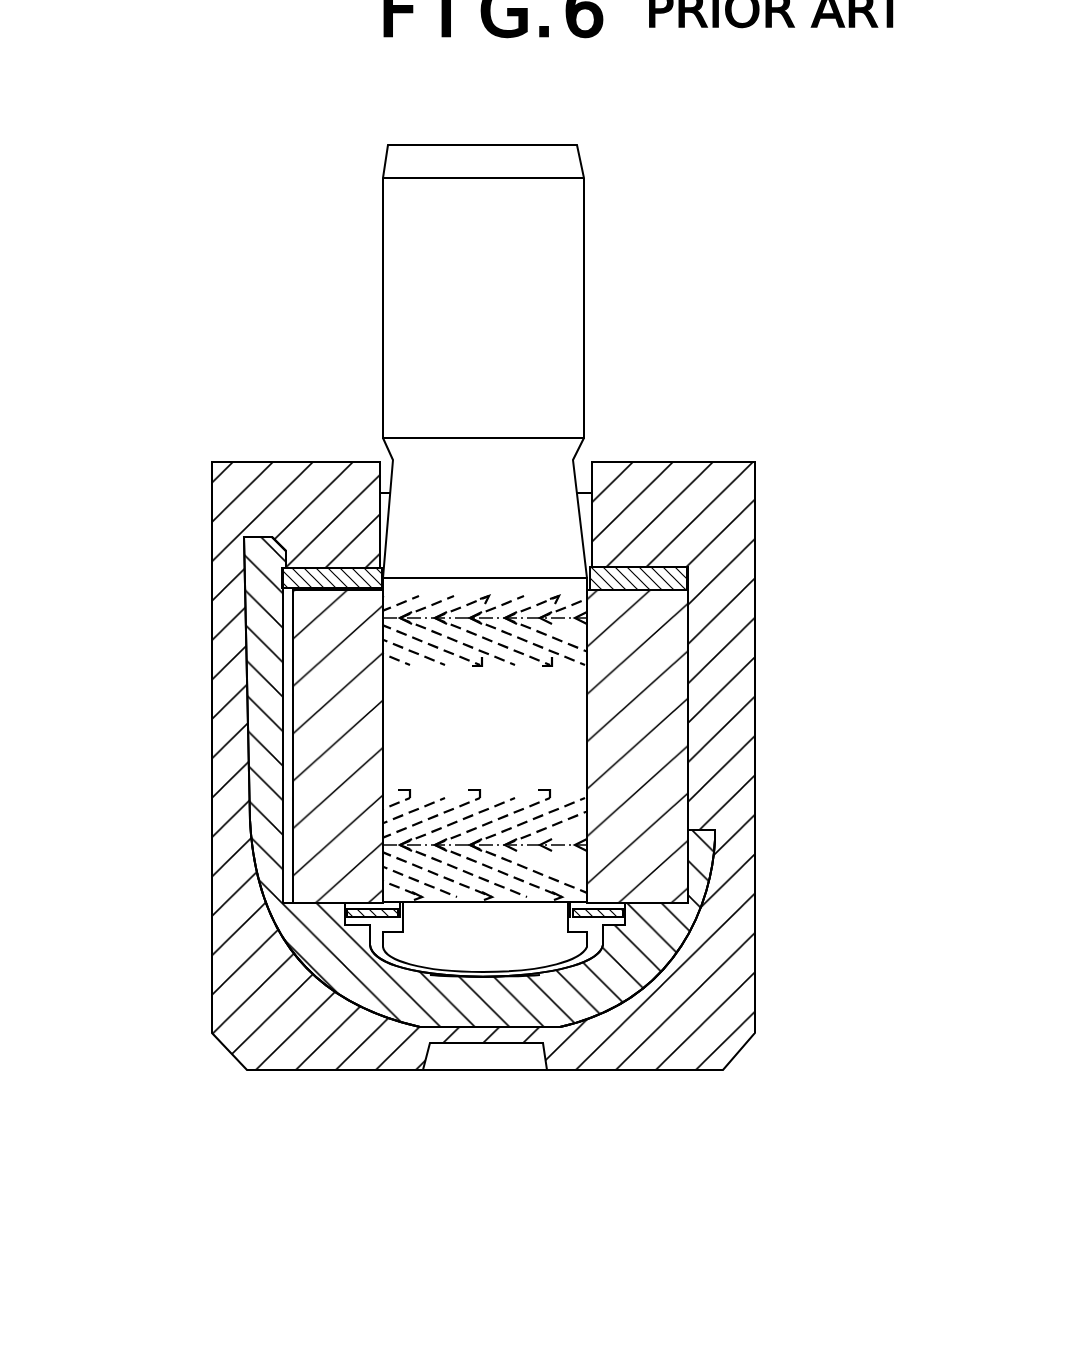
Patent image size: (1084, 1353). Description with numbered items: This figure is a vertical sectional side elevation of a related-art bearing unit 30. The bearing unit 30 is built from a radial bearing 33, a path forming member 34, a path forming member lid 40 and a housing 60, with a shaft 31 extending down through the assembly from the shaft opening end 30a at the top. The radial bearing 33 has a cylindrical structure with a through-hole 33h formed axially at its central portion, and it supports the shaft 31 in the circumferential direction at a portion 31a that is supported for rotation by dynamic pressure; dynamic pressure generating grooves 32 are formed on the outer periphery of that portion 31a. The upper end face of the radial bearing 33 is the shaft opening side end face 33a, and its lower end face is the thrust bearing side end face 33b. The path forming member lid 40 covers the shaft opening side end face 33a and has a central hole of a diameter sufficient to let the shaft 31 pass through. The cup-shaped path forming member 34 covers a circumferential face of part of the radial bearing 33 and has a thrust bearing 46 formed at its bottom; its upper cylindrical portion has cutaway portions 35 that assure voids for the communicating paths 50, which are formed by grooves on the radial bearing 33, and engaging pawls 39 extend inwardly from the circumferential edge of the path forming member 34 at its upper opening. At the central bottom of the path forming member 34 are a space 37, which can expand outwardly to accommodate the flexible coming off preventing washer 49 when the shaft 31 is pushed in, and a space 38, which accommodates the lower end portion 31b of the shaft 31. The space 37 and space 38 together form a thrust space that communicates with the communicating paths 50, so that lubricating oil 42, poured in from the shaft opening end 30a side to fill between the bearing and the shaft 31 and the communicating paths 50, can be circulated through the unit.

The bearing unit 30 is at (470, 1165).
The shaft opening end 30a is at (384, 478).
The shaft 31 is at (566, 205).
The portion supported for rotation by dynamic pressure 31a is at (413, 767).
The lower end portion of the shaft 31b is at (458, 957).
The dynamic pressure generating grooves 32 is at (397, 655).
The radial bearing 33 is at (668, 736).
The shaft opening side end face 33a is at (648, 572).
The thrust bearing side end face 33b is at (652, 912).
The through-hole 33h is at (570, 675).
The path forming member 34 is at (650, 951).
The cutaway portions 35 is at (703, 832).
The space 37 is at (368, 927).
The space 38 is at (393, 962).
The engaging pawls 39 is at (282, 566).
The path forming member lid 40 is at (300, 580).
The lubricating oil 42 is at (586, 517).
The thrust bearing 46 is at (497, 976).
The coming off preventing washer 49 is at (648, 911).
The communicating paths 50 is at (282, 707).
The housing 60 is at (716, 479).